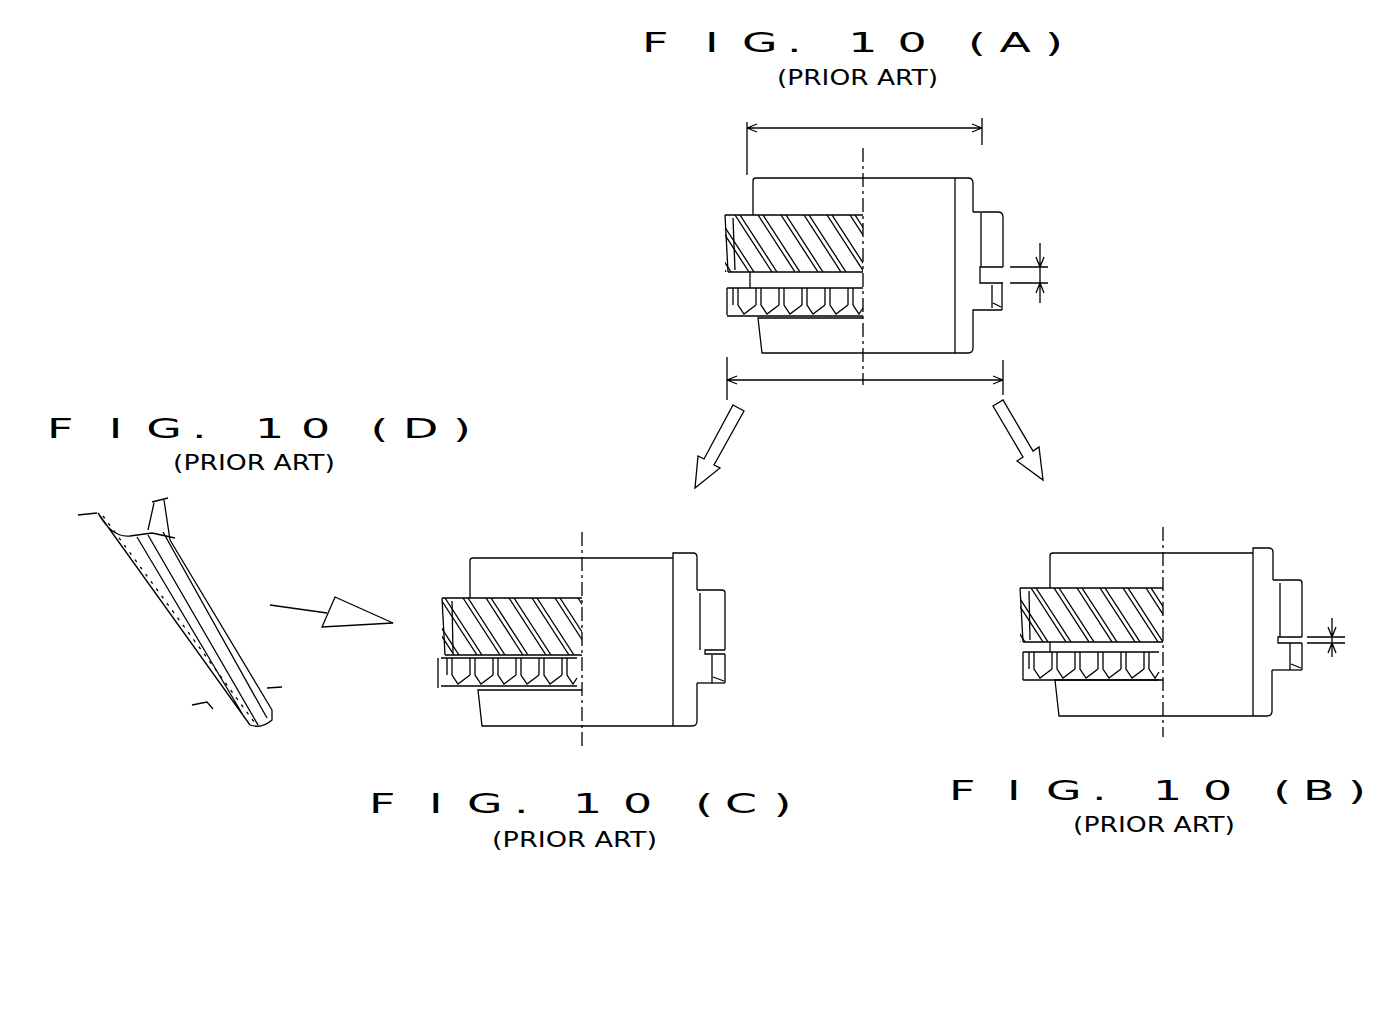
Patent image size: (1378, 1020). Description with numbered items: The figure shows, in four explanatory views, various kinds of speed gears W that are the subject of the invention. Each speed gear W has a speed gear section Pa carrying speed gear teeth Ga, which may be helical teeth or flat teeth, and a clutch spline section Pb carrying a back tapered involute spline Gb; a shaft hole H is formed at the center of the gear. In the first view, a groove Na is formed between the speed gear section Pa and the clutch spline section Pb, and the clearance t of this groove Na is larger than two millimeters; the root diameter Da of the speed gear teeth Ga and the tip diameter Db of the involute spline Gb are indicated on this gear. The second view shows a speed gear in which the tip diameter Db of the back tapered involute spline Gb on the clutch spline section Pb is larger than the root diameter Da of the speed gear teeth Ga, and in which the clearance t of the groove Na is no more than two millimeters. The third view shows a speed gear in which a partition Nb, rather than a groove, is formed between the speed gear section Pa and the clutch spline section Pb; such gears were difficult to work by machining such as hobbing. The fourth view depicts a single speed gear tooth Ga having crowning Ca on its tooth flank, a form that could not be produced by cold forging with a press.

In FIG. 10A, the speed gear W is at (997, 169).
In FIG. 10C, the speed gear W is at (709, 529).
In FIG. 10B, the speed gear W is at (1270, 524).
In FIG. 10A, the speed gear teeth Ga is at (752, 242).
In FIG. 10C, the speed gear teeth Ga is at (722, 625).
In FIG. 10B, the speed gear teeth Ga is at (1295, 590).
In FIG. 10D, the speed gear teeth Ga is at (208, 622).
In FIG. 10A, the back tapered involute spline Gb is at (735, 302).
In FIG. 10C, the back tapered involute spline Gb is at (723, 670).
In FIG. 10B, the back tapered involute spline Gb is at (1293, 658).
In FIG. 10A, the speed gear section Pa is at (973, 238).
In FIG. 10C, the speed gear section Pa is at (697, 620).
In FIG. 10B, the speed gear section Pa is at (1263, 597).
In FIG. 10A, the clutch spline section Pb is at (977, 308).
In FIG. 10C, the clutch spline section Pb is at (693, 672).
In FIG. 10B, the clutch spline section Pb is at (1273, 667).
In FIG. 10A, the groove Na is at (752, 280).
In FIG. 10B, the groove Na is at (1290, 637).
In FIG. 10C, the partition Nb is at (712, 648).
In FIG. 10A, the shaft hole H is at (953, 230).
In FIG. 10A, the root diameter Da is at (864, 136).
In FIG. 10A, the tip diameter Db is at (865, 383).
In FIG. 10A, the clearance t is at (1038, 273).
In FIG. 10B, the clearance t is at (1332, 637).
In FIG. 10D, the crowning Ca is at (168, 535).